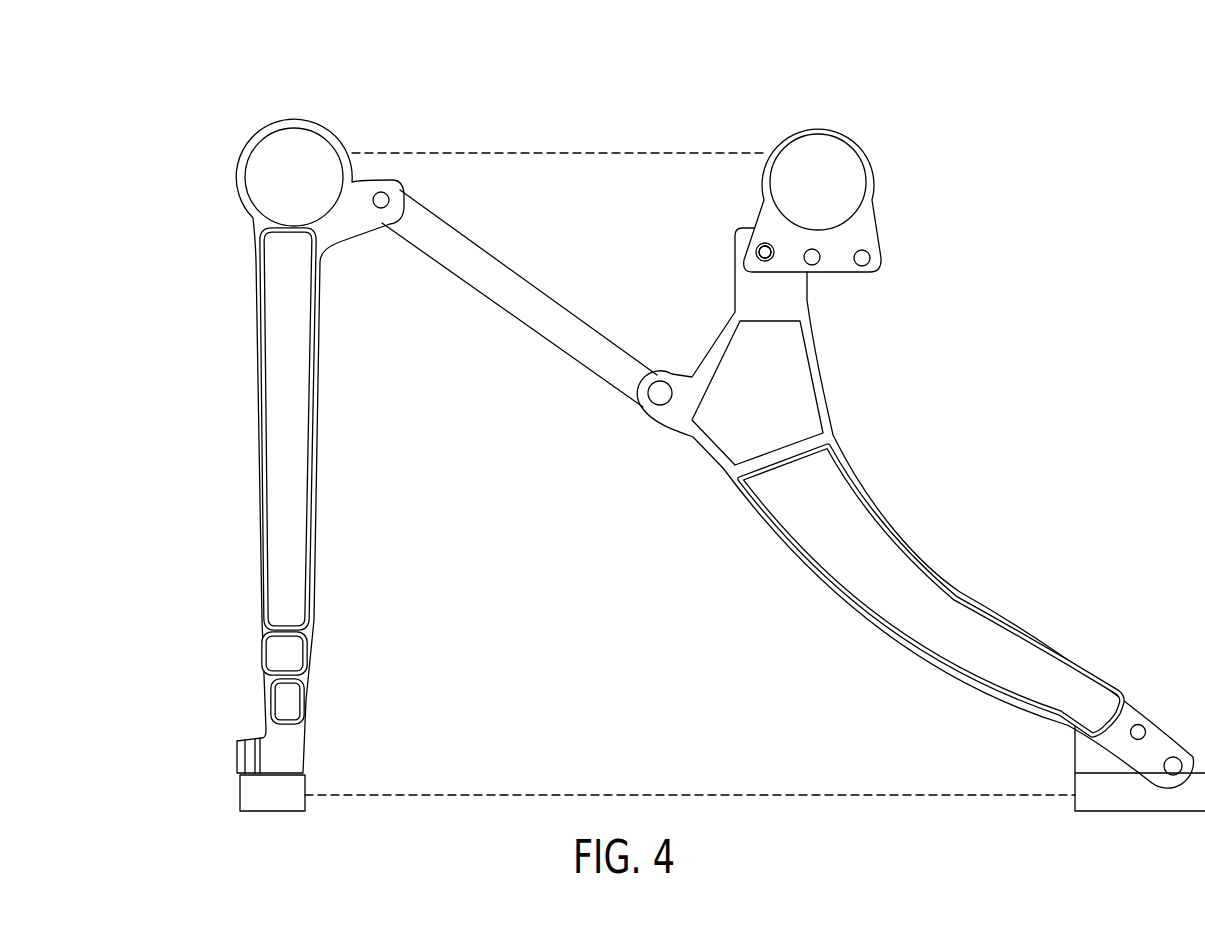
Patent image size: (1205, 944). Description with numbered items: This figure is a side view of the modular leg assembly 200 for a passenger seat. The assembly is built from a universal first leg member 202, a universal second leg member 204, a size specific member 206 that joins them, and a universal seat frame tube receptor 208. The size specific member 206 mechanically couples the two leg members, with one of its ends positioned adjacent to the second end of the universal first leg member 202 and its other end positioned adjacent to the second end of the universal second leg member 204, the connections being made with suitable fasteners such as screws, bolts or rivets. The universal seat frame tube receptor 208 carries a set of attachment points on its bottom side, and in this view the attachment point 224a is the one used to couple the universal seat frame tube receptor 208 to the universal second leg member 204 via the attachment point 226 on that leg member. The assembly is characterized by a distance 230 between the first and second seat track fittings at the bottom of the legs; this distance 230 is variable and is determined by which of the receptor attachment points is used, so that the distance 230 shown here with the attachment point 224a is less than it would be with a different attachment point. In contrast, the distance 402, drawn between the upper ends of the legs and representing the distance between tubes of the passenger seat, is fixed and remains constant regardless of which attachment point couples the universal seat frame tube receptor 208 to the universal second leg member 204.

The modular leg assembly 200 is at (140, 127).
The universal first leg member 202 is at (283, 366).
The universal second leg member 204 is at (805, 402).
The size specific member 206 is at (478, 265).
The universal seat frame tube receptor 208 is at (873, 180).
The attachment point 224a is at (760, 258).
The attachment point 226 is at (772, 256).
The distance 230 is at (693, 793).
The distance 402 is at (555, 150).